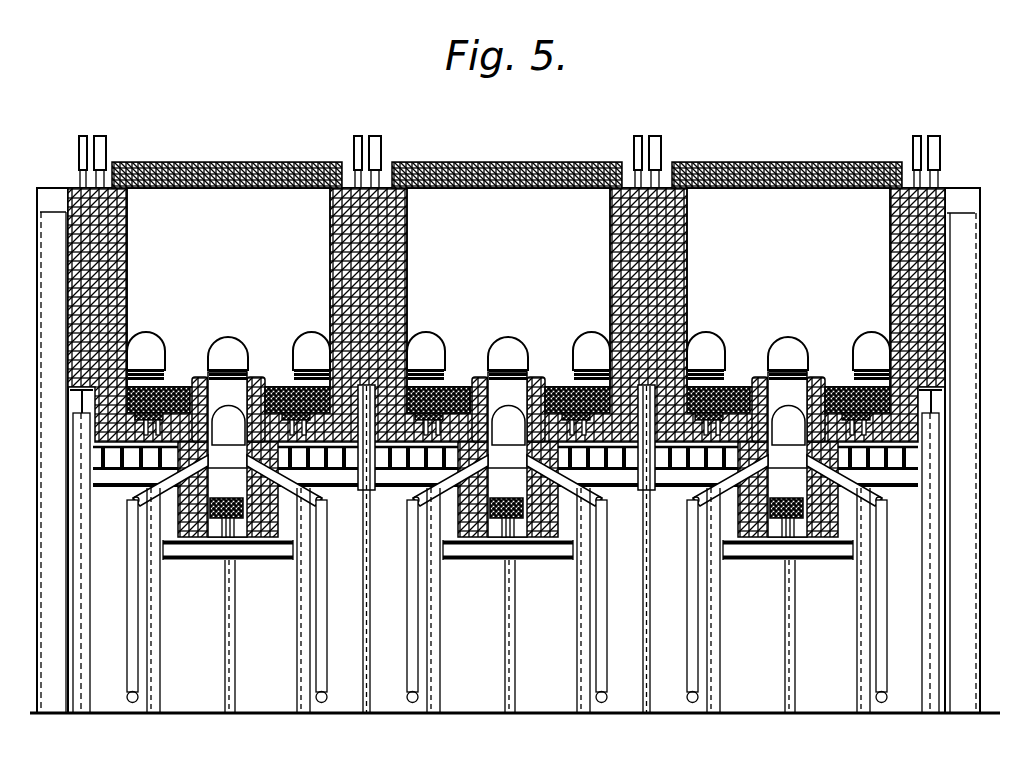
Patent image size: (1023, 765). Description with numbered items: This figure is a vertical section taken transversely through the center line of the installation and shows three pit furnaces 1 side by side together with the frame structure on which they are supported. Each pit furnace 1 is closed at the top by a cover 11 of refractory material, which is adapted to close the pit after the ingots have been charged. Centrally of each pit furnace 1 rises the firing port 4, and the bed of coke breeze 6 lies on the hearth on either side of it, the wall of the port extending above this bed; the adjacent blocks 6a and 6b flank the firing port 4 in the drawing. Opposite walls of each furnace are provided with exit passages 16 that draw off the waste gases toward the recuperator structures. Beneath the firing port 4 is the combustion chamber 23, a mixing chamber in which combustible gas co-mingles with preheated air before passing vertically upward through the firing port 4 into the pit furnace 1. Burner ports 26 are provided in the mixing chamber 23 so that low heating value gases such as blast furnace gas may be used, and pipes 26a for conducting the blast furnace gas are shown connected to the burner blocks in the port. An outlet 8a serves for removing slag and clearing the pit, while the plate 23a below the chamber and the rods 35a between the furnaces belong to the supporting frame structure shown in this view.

The pit furnace 1 is at (228, 287).
The cover 11 is at (256, 161).
The exit passages 16 is at (168, 320).
The bed of coke breeze 6 is at (172, 388).
The refractory block 6a is at (450, 388).
The refractory collar 6b is at (251, 382).
The firing port 4 is at (227, 454).
The burner ports 26 is at (228, 426).
The combustion chamber 23 is at (227, 480).
The outlet 8a is at (133, 506).
The plate 23a is at (260, 546).
The pipes 26a is at (138, 676).
The tie rod 35a is at (363, 473).